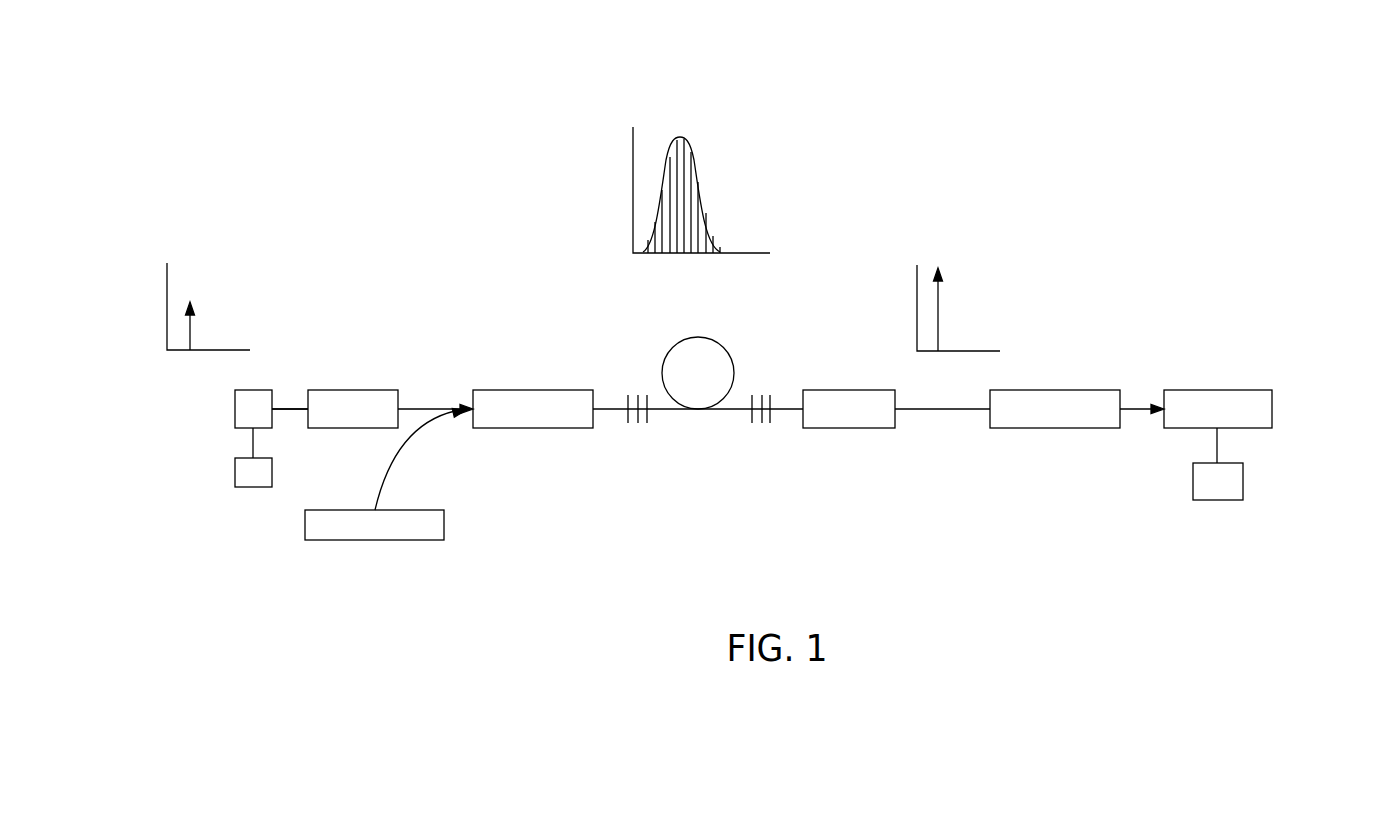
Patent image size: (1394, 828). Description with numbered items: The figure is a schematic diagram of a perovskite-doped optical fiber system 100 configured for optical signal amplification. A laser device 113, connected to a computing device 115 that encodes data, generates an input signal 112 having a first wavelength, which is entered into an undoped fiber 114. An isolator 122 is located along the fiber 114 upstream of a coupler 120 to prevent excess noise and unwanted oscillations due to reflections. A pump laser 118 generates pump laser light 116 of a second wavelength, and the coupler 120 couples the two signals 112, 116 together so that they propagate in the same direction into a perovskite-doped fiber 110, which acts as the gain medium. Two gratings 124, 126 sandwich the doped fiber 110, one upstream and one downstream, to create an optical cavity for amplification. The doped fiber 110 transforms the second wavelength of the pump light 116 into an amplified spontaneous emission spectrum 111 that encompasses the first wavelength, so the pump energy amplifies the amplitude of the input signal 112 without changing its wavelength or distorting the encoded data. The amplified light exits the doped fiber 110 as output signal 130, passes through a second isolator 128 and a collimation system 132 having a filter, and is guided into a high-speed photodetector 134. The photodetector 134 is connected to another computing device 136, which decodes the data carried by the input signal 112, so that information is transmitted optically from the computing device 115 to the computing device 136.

The perovskite-doped optical fiber system 100 is at (1266, 111).
The perovskite-doped fiber 110 is at (698, 338).
The amplified spontaneous emission spectrum 111 is at (622, 195).
The input signal 112 is at (208, 291).
The laser device 113 is at (235, 409).
The undoped fiber 114 is at (290, 405).
The computing device 115 is at (235, 473).
The pump laser light 116 is at (397, 475).
The pump laser 118 is at (375, 541).
The coupler 120 is at (533, 390).
The isolator 122 is at (352, 390).
The grating 124 is at (637, 430).
The grating 126 is at (762, 430).
The second isolator 128 is at (848, 390).
The output signal 130 is at (965, 287).
The collimation system 132 is at (1055, 390).
The high-speed photodetector 134 is at (1217, 390).
The computing device 136 is at (1217, 500).